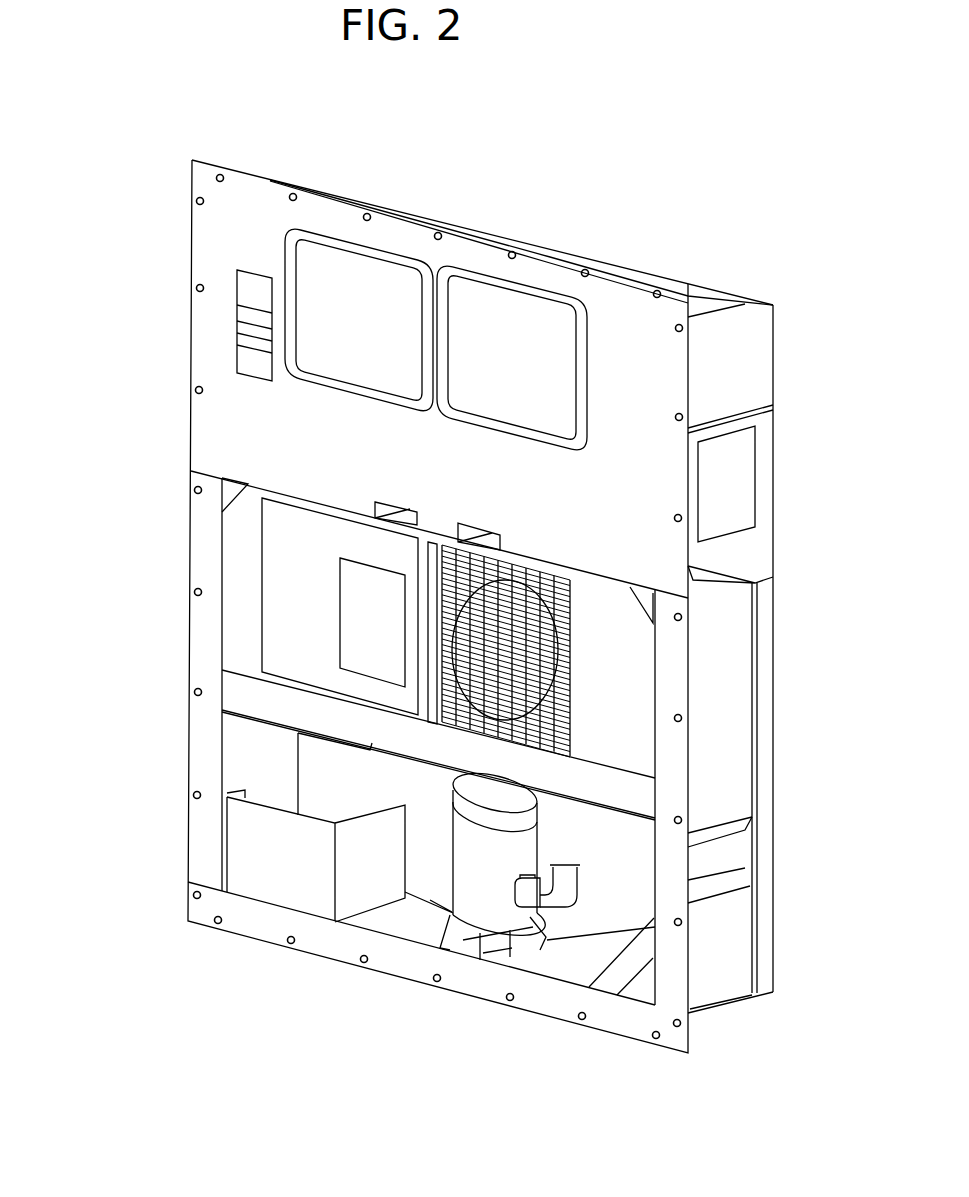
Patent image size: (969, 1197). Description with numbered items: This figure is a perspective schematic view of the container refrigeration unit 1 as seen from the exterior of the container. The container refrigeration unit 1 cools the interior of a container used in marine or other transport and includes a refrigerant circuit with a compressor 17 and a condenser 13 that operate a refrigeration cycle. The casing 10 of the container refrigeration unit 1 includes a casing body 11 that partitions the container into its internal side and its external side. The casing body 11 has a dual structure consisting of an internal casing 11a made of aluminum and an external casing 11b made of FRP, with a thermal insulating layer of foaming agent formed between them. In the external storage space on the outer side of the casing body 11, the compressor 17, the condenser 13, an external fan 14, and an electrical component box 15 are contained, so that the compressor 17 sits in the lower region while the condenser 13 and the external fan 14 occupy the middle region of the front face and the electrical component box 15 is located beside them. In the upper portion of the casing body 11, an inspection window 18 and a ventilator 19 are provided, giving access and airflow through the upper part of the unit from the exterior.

The container refrigeration unit 1 is at (130, 141).
The casing 10 is at (163, 234).
The casing body 11 is at (235, 408).
The internal casing 11a is at (748, 353).
The external casing 11b is at (733, 1003).
The condenser 13 is at (620, 795).
The external fan 14 is at (572, 657).
The electrical component box 15 is at (262, 570).
The compressor 17 is at (538, 833).
The inspection window 18 is at (487, 306).
The ventilator 19 is at (238, 315).